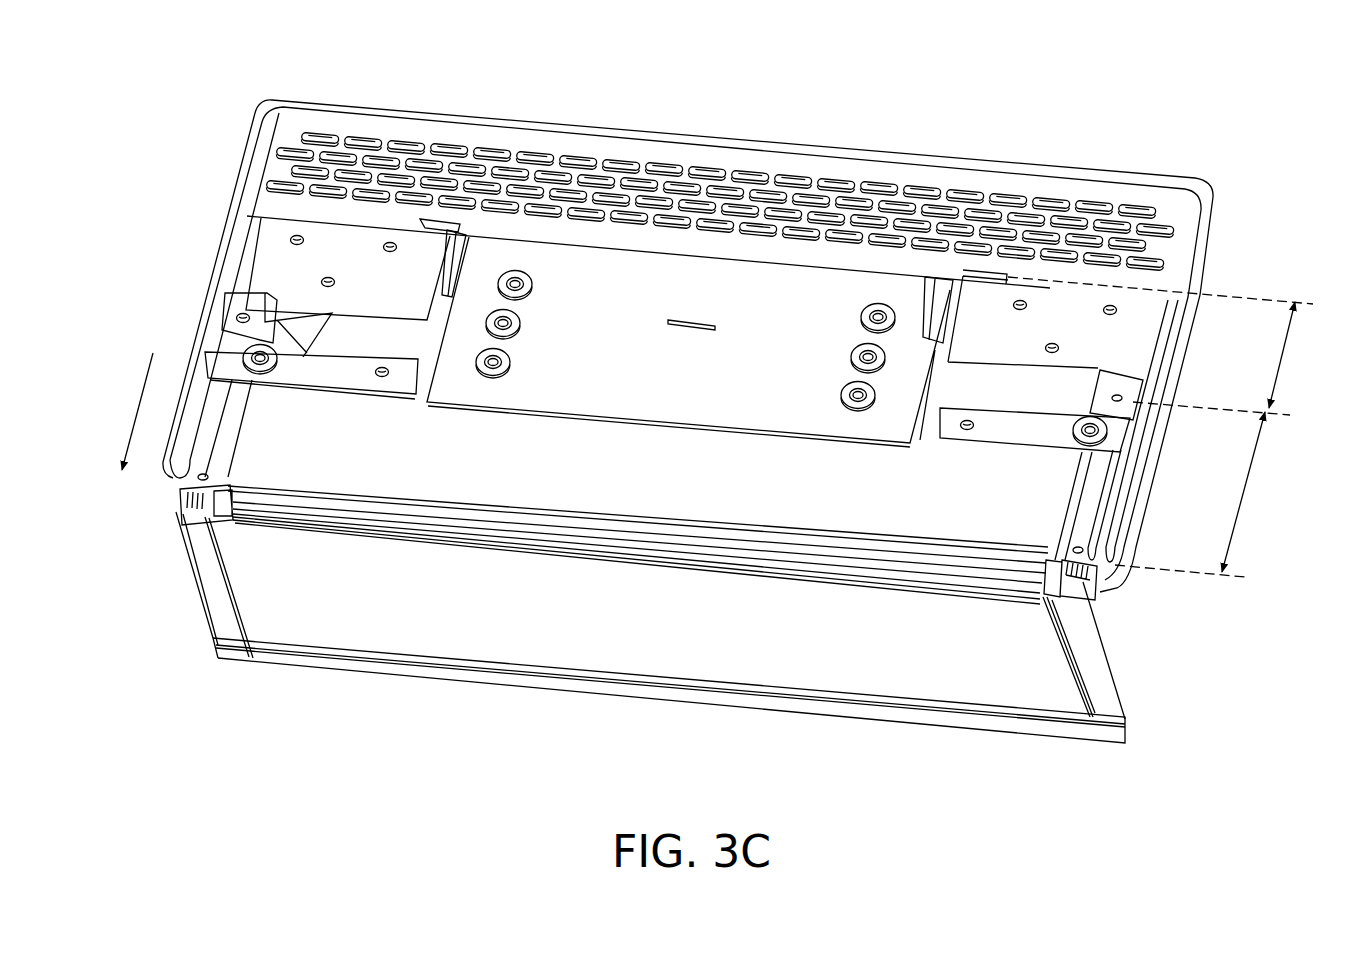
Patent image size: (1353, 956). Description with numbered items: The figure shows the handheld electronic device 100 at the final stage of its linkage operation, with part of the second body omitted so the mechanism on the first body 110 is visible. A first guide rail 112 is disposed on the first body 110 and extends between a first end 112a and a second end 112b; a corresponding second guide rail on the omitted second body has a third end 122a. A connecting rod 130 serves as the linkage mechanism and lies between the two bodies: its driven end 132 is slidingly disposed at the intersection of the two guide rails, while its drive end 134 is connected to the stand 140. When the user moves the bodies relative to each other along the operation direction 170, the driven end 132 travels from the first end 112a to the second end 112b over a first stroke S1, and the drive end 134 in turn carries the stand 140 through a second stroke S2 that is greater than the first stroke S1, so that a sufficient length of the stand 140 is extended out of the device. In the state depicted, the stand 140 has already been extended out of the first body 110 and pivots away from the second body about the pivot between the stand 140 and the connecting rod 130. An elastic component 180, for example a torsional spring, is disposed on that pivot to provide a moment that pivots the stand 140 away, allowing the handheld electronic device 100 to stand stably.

The handheld electronic device 100 is at (1243, 778).
The first body 110 is at (1203, 257).
The first guide rail 112 is at (1072, 399).
The first end of the first guide rail 112a is at (984, 274).
The second end of the first guide rail 112b is at (1146, 392).
The third end of the second guide rail 122a is at (946, 390).
The connecting rod 130 is at (1093, 503).
The driven end 132 is at (1117, 394).
The drive end 134 is at (1085, 600).
The stand 140 is at (845, 708).
The operation direction 170 is at (132, 416).
The elastic component 180 is at (1110, 565).
The first stroke S1 is at (1161, 346).
The second stroke S2 is at (1199, 494).